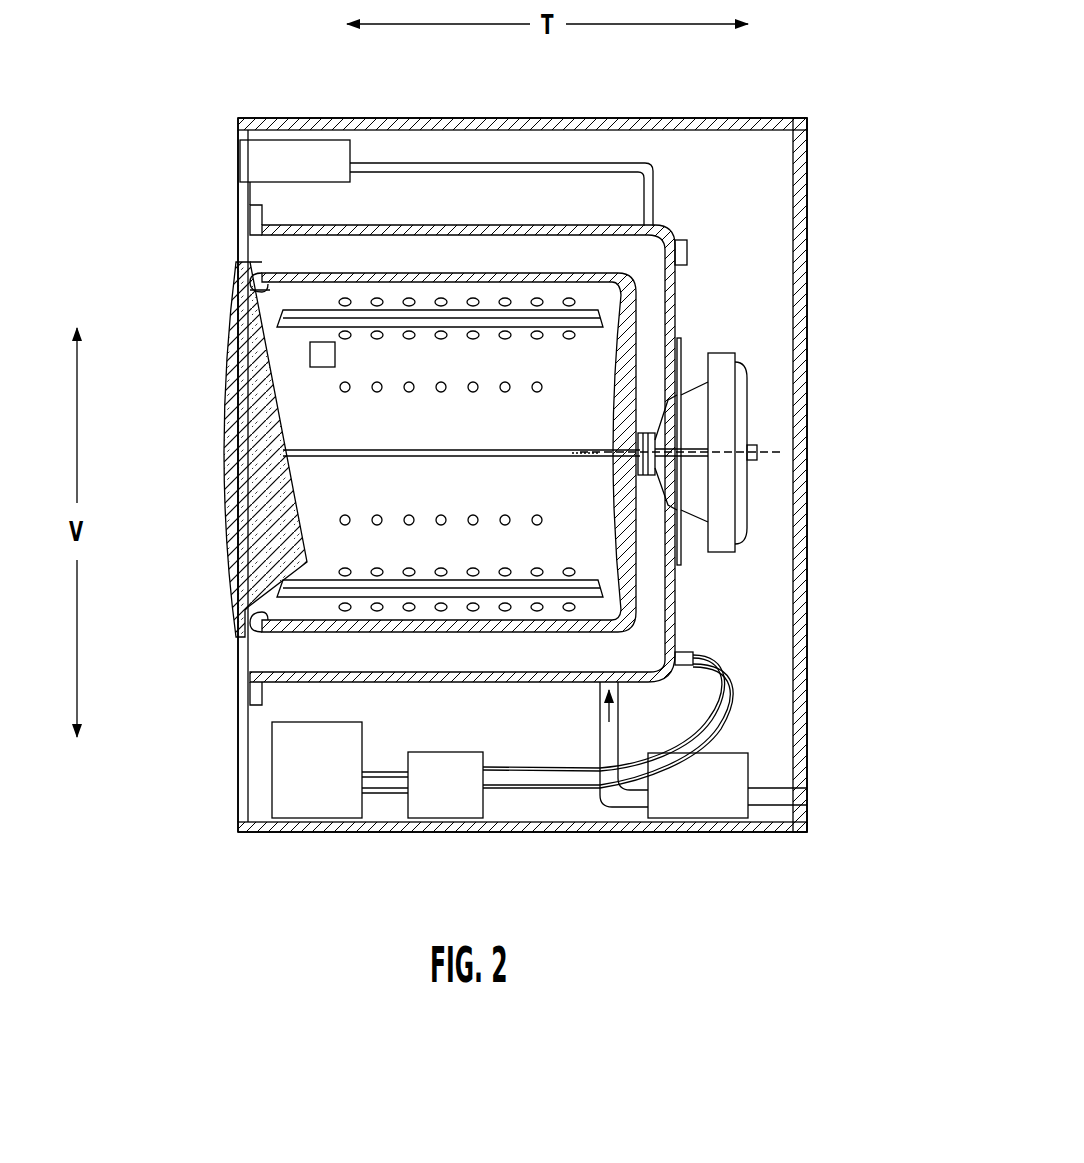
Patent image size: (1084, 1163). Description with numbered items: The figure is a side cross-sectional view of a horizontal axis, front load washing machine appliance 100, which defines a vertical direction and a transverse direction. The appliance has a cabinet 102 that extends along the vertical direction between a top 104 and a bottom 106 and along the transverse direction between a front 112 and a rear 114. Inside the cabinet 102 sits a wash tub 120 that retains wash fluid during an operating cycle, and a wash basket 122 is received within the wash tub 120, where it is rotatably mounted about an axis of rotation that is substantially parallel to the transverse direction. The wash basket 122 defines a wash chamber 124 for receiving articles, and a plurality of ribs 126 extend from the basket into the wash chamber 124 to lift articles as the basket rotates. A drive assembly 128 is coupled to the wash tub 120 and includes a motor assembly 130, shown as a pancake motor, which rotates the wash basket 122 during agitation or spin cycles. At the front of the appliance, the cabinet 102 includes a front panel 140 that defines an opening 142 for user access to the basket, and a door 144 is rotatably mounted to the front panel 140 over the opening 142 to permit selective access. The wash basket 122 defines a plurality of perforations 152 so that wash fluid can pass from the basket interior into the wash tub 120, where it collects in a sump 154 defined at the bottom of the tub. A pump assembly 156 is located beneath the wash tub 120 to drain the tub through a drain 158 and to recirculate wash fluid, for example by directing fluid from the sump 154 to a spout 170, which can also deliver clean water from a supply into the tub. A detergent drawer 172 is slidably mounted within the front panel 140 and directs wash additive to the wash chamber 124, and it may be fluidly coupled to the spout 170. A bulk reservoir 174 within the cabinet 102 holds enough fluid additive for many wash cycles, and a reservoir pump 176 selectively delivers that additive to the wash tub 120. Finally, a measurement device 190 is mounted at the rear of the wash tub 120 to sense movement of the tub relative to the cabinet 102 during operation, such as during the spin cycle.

The washing machine appliance 100 is at (243, 60).
The cabinet 102 is at (808, 462).
The top 104 is at (815, 120).
The bottom 106 is at (830, 808).
The front 112 is at (236, 118).
The rear 114 is at (808, 280).
The wash tub 120 is at (665, 296).
The wash basket 122 is at (415, 282).
The wash chamber 124 is at (300, 393).
The ribs 126 is at (380, 450).
The drive assembly 128 is at (748, 418).
The motor assembly 130 is at (740, 382).
The front panel 140 is at (250, 657).
The opening 142 is at (266, 312).
The door 144 is at (245, 525).
The perforations 152 is at (503, 388).
The sump 154 is at (637, 640).
The pump assembly 156 is at (722, 798).
The drain 158 is at (605, 700).
The spout 170 is at (655, 196).
The detergent drawer 172 is at (300, 162).
The bulk reservoir 174 is at (292, 778).
The reservoir pump 176 is at (430, 765).
The measurement device 190 is at (690, 258).